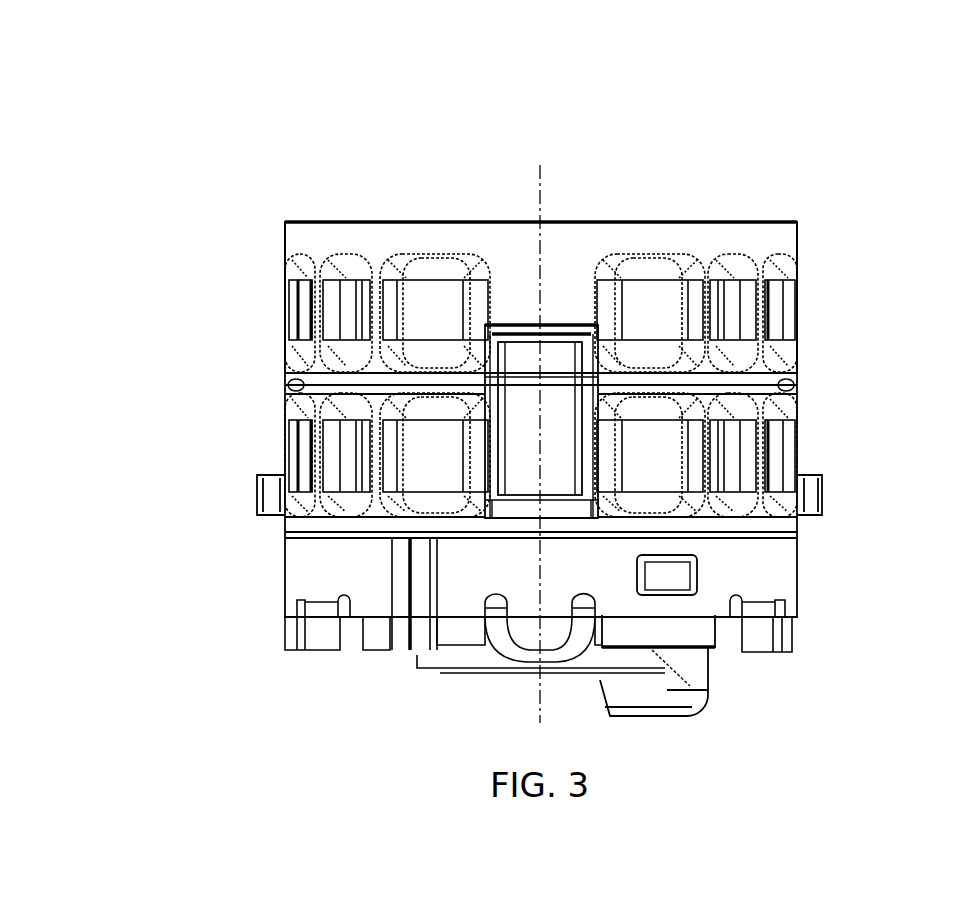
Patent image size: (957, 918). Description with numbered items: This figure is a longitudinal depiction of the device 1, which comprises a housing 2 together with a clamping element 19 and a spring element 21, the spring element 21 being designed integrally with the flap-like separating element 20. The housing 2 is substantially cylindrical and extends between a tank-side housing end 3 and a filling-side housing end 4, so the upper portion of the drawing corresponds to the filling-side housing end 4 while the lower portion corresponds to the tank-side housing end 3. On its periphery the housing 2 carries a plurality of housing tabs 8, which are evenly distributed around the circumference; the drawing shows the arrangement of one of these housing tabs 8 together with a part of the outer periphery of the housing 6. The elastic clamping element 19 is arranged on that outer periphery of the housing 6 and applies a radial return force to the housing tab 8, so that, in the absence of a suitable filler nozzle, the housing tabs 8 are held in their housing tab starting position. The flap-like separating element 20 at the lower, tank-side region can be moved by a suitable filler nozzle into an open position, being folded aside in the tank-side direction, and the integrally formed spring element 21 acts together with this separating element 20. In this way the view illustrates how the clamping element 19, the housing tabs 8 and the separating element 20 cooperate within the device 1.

The device 1 is at (539, 398).
The housing 2 is at (539, 319).
The housing 6 is at (729, 243).
The housing tab 8 is at (515, 355).
The filling-side housing end 4 is at (812, 247).
The clamping element 19 is at (743, 378).
The tank-side housing end 3 is at (532, 656).
The spring element 21 is at (338, 627).
The separating element 20 is at (550, 673).